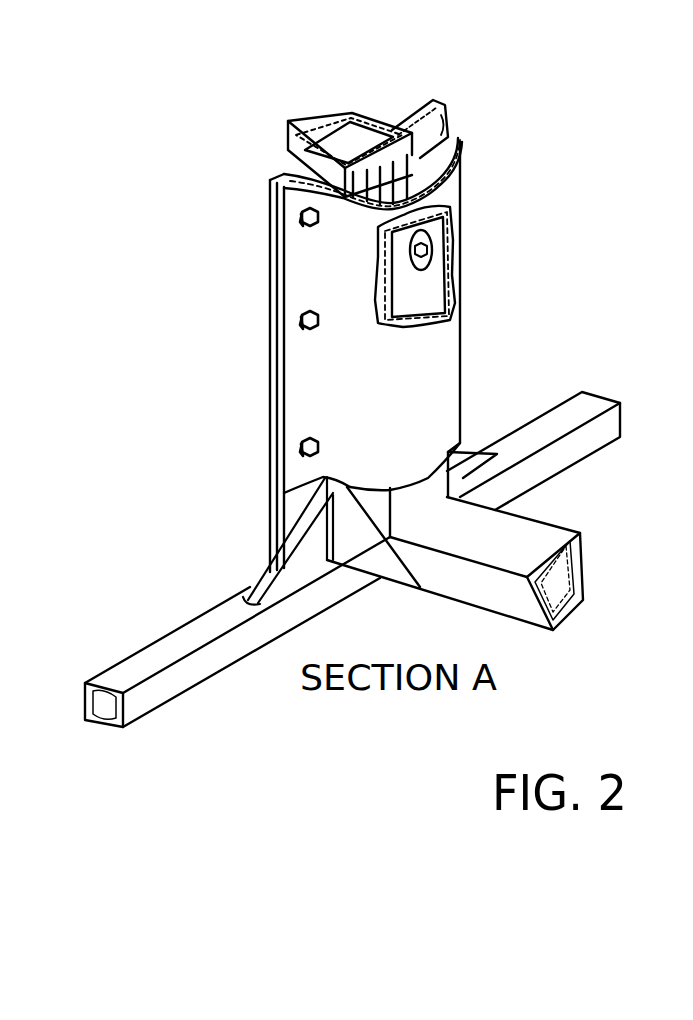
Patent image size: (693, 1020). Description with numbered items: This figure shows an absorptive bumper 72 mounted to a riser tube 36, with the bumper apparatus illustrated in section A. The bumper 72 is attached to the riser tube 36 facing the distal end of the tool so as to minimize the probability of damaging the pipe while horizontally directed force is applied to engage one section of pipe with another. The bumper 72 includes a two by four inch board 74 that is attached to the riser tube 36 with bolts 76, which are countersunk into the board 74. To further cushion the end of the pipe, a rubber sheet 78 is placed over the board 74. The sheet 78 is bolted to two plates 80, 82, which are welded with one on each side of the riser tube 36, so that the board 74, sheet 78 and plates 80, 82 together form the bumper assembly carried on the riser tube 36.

The absorptive bumper 72 is at (538, 328).
The riser tube 36 is at (350, 116).
The 2×4 inch board 74 is at (462, 158).
The bolts 76 is at (432, 247).
The rubber sheet 78 is at (450, 353).
The plate 80 is at (268, 197).
The plate 82 is at (435, 102).